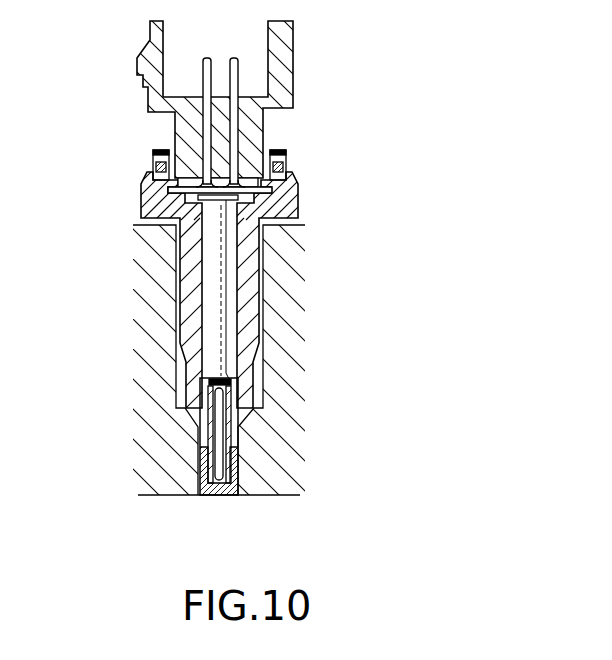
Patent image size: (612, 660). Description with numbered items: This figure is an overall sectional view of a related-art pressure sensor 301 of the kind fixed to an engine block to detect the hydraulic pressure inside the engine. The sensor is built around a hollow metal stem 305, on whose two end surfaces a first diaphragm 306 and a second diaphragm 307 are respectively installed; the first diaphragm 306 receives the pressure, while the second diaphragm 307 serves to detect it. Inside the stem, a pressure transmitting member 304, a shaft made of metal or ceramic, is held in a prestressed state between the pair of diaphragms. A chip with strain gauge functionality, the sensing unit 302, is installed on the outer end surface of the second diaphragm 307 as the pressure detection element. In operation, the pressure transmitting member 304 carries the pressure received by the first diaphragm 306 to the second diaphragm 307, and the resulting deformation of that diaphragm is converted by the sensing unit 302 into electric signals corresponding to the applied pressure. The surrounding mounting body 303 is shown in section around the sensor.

The pressure sensor 301 is at (341, 207).
The sensing unit 302 is at (232, 373).
The mounting body 303 is at (236, 502).
The pressure transmitting member 304 is at (212, 455).
The hollow metal stem 305 is at (244, 415).
The first diaphragm 306 is at (197, 492).
The second diaphragm 307 is at (205, 380).